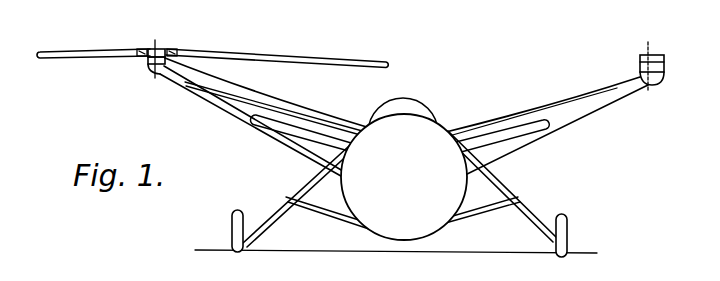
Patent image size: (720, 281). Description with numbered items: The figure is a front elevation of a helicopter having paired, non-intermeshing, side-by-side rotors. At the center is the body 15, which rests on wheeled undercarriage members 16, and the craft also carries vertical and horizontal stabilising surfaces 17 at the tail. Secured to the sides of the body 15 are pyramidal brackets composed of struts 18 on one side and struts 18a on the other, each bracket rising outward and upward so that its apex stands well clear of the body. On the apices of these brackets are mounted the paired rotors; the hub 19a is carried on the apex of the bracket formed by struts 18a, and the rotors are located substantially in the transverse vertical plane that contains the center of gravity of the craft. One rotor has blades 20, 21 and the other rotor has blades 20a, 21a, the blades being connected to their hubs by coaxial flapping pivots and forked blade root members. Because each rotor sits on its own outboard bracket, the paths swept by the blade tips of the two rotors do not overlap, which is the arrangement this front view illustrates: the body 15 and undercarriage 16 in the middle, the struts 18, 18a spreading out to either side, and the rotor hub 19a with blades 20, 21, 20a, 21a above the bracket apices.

The body 15 is at (404, 169).
The wheeled undercarriage members 16 is at (241, 245).
The vertical and horizontal stabilising surfaces 17 is at (300, 128).
The struts 18 is at (585, 95).
The struts 18a is at (245, 102).
The hub 19a is at (166, 49).
The blade 20 is at (640, 58).
The blade 20a is at (256, 56).
The blade 21 is at (152, 47).
The blade 21a is at (84, 50).